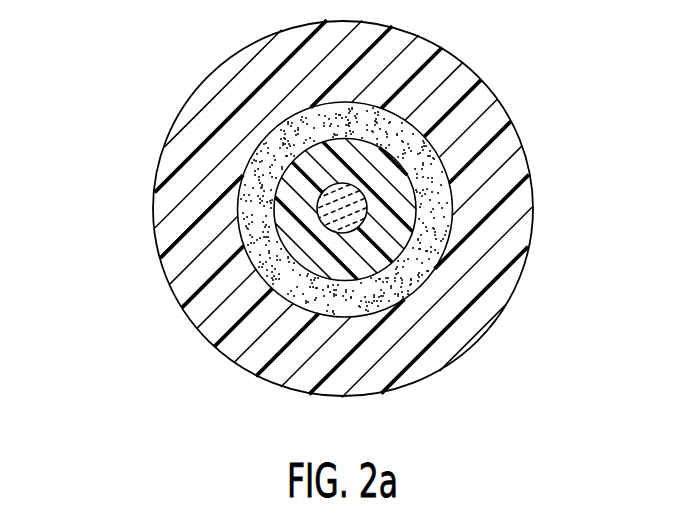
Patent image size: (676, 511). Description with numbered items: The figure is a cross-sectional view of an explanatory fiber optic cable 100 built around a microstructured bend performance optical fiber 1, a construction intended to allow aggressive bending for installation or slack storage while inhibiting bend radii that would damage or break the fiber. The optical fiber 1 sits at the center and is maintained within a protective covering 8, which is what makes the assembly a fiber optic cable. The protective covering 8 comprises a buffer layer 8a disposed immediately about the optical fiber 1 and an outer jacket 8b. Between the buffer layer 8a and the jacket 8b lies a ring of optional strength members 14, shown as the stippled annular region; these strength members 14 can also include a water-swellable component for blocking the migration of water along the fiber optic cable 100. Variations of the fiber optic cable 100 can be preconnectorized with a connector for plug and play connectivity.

The fiber optic cable 100 is at (82, 128).
The optical fiber 1 is at (350, 213).
The strength members 14 is at (250, 232).
The protective covering 8 is at (593, 277).
The buffer layer 8a is at (388, 243).
The jacket 8b is at (502, 230).